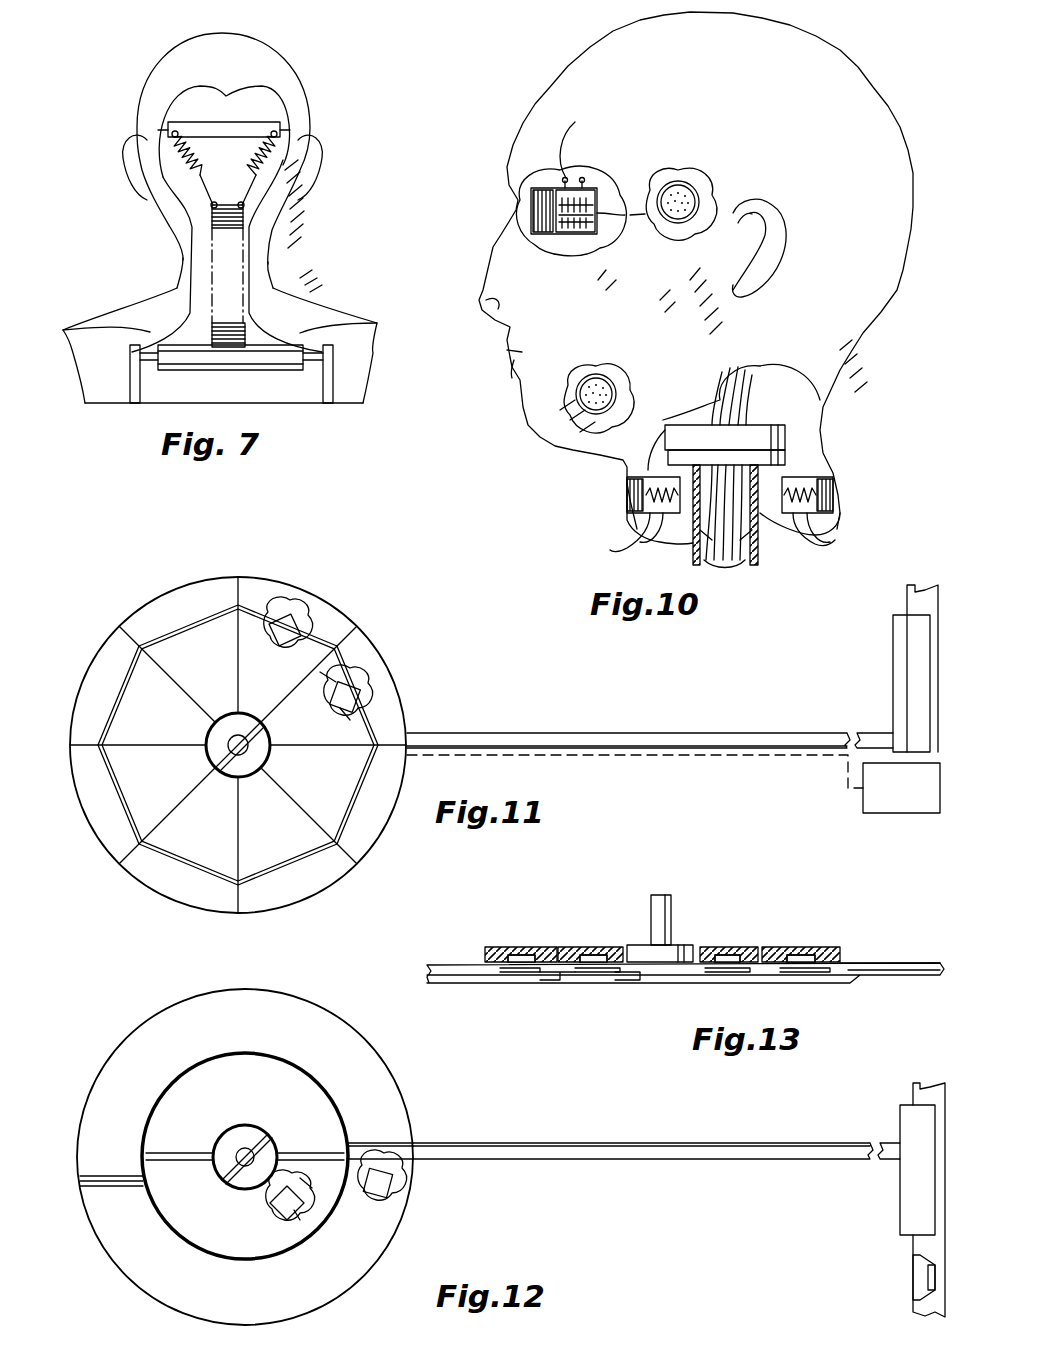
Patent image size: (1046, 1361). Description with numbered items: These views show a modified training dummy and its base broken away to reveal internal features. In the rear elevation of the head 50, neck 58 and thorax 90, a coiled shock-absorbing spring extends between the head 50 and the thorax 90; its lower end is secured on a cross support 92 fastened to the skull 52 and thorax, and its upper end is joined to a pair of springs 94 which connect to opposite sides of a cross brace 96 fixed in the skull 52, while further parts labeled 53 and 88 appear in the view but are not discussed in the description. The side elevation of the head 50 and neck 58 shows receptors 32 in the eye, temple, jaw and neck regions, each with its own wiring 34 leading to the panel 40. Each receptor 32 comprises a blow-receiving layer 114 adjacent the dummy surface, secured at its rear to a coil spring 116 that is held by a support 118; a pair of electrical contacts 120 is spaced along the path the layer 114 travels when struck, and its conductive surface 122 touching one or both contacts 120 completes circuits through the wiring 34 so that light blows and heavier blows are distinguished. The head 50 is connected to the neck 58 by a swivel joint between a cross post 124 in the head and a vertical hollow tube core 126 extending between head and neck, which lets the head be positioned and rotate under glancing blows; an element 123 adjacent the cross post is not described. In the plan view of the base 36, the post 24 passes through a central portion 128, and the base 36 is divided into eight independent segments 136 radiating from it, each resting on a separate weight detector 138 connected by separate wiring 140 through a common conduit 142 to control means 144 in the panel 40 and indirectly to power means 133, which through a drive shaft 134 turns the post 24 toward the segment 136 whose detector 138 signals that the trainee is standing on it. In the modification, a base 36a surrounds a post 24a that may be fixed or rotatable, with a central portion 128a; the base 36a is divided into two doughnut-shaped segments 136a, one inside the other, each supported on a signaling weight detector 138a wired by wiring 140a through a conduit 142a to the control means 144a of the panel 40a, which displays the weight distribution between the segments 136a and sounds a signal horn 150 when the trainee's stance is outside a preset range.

In FIG. 7, the head 50 is at (210, 210).
In FIG. 10, the head 50 is at (686, 292).
In FIG. 7, the skull 52 is at (143, 99).
In FIG. 10, the skull 52 is at (876, 98).
In FIG. 7, the base support posts 53 is at (130, 383).
In FIG. 7, the neck 58 is at (177, 273).
In FIG. 10, the neck 58 is at (834, 466).
In FIG. 7, the neck column / spine 88 is at (248, 283).
In FIG. 7, the thorax 90 is at (135, 322).
In FIG. 7, the cross support 92 is at (217, 370).
In FIG. 7, the pair of springs 94 is at (280, 147).
In FIG. 7, the cross brace 96 is at (238, 121).
In FIG. 10, the receptor 32 is at (608, 245).
In FIG. 10, the wiring 34 is at (600, 198).
In FIG. 10, the blow-receiving pad or layer 114 is at (532, 216).
In FIG. 10, the coil spring 116 is at (572, 236).
In FIG. 10, the support 118 is at (592, 240).
In FIG. 10, the electrical contact 120 is at (580, 178).
In FIG. 10, the surface 122 is at (563, 178).
In FIG. 10, the collar ring 123 is at (790, 456).
In FIG. 10, the cross post 124 is at (790, 430).
In FIG. 10, the vertical hollow tube core 126 is at (692, 550).
In FIG. 11, the base 36 is at (140, 596).
In FIG. 11, the segment 136 is at (222, 595).
In FIG. 11, the weight detector 138 is at (285, 610).
In FIG. 11, the wiring 140 is at (380, 714).
In FIG. 11, the post 24 is at (232, 736).
In FIG. 11, the central portion 128 is at (212, 740).
In FIG. 11, the conduit 142 is at (510, 735).
In FIG. 11, the control means 144 is at (892, 708).
In FIG. 11, the panel 40 is at (907, 602).
In FIG. 11, the drive shaft 134 is at (775, 760).
In FIG. 11, the power means 133 is at (862, 805).
In FIG. 13, the base 36a is at (495, 958).
In FIG. 12, the base 36a is at (120, 1030).
In FIG. 13, the doughnut shaped circular segment 136a is at (515, 945).
In FIG. 12, the doughnut shaped circular segment 136a is at (328, 1140).
In FIG. 13, the signaling weight detector 138a is at (525, 955).
In FIG. 12, the signaling weight detector 138a is at (392, 1184).
In FIG. 13, the wiring 140a is at (619, 980).
In FIG. 12, the wiring 140a is at (307, 1218).
In FIG. 13, the post 24a is at (669, 896).
In FIG. 12, the post 24a is at (253, 1145).
In FIG. 13, the hub 128a is at (632, 945).
In FIG. 12, the hub 128a is at (218, 1152).
In FIG. 13, the conduit 142a is at (861, 966).
In FIG. 12, the conduit 142a is at (773, 1146).
In FIG. 12, the control means 144a is at (900, 1214).
In FIG. 12, the panel 40a is at (913, 1247).
In FIG. 12, the signal horn 150 is at (913, 1292).